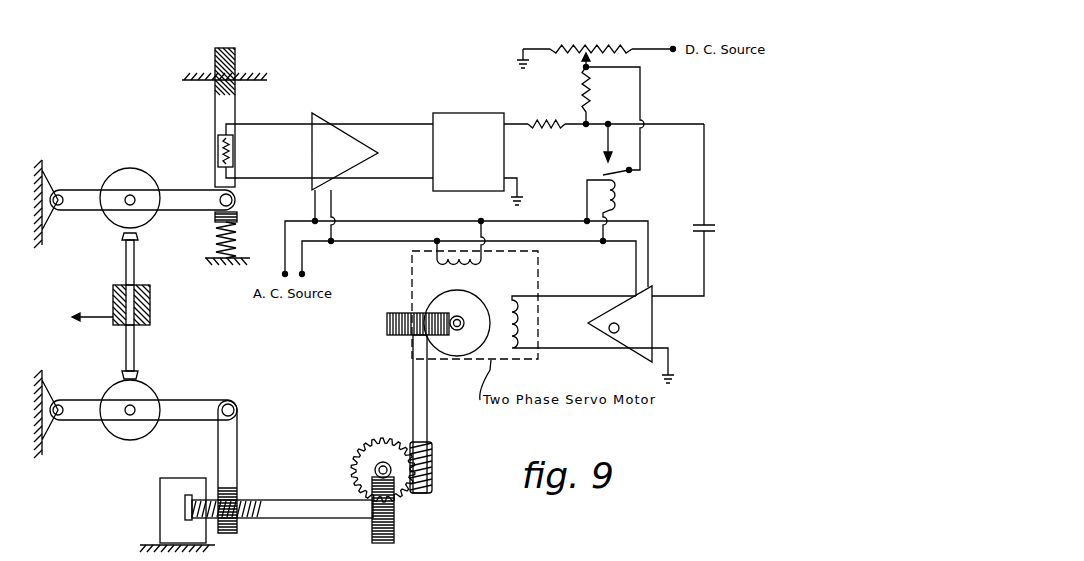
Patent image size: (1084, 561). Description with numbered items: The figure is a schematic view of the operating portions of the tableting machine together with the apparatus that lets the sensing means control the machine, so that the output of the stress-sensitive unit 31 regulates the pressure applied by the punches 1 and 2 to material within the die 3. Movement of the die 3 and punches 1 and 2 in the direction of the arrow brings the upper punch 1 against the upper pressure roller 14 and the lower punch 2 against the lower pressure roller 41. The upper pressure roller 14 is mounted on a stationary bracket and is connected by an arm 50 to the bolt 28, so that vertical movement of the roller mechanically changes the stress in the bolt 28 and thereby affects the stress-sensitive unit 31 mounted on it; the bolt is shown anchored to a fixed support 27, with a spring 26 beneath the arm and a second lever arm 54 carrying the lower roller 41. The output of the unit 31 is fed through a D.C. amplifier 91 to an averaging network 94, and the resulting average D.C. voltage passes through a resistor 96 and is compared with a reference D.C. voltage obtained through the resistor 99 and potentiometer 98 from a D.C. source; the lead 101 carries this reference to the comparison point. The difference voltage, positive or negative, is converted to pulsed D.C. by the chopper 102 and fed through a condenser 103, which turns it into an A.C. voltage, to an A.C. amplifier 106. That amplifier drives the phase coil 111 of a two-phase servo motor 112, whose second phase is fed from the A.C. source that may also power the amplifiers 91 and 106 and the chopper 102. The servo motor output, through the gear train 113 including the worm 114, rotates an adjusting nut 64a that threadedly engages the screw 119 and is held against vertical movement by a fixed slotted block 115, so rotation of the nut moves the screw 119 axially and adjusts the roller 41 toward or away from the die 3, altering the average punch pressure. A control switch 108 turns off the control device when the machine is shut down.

The upper punch 1 is at (127, 263).
The lower punch 2 is at (128, 348).
The die 3 is at (113, 297).
The upper pressure roller 14 is at (140, 170).
The spring 26 is at (239, 231).
The fixed support 27 is at (255, 83).
The bolt 28 is at (215, 113).
The stress-sensitive unit 31 is at (218, 154).
The lower pressure roller 41 is at (150, 394).
The arm 50 is at (198, 206).
The lower lever arm 54 is at (206, 404).
The adjusting nut 64a is at (262, 522).
The D.C. amplifier 91 is at (320, 123).
The averaging network 94 is at (447, 117).
The resistor 96 is at (538, 118).
The potentiometer 98 is at (608, 45).
The resistor 99 is at (578, 92).
The switch lead 101 is at (641, 101).
The chopper 102 is at (634, 183).
The condenser 103 is at (711, 230).
The A.C. amplifier 106 is at (650, 355).
The control switch 108 is at (613, 334).
The phase coil 111 is at (513, 298).
The two-phase servo motor 112 is at (462, 361).
The gear train 113 is at (372, 435).
The worm 114 is at (243, 498).
The fixed slotted block 115 is at (160, 507).
The screw 119 is at (236, 450).